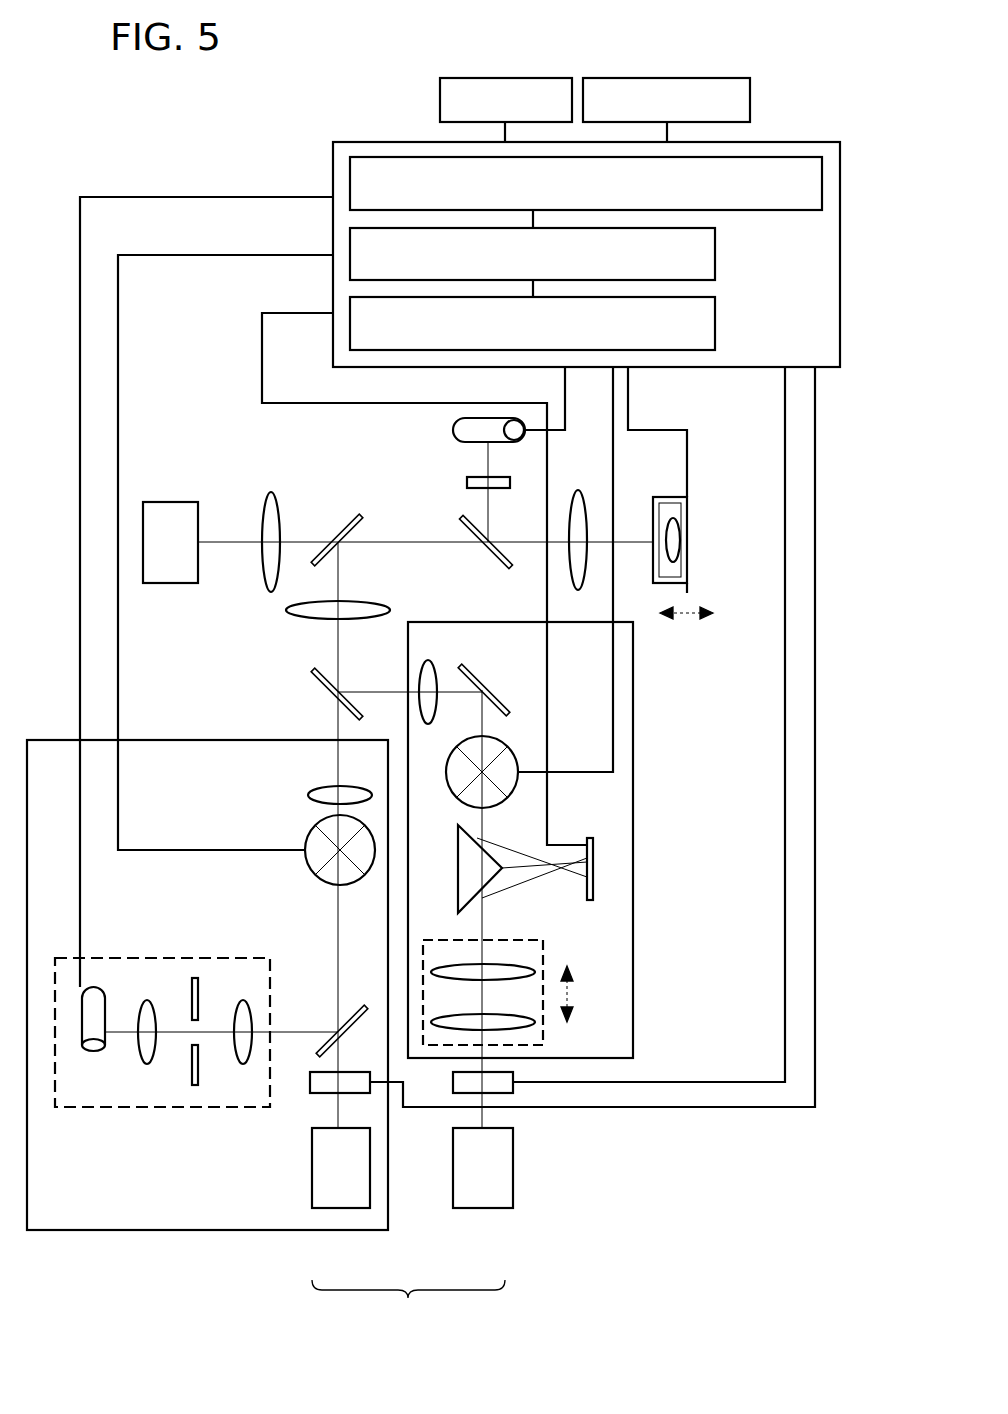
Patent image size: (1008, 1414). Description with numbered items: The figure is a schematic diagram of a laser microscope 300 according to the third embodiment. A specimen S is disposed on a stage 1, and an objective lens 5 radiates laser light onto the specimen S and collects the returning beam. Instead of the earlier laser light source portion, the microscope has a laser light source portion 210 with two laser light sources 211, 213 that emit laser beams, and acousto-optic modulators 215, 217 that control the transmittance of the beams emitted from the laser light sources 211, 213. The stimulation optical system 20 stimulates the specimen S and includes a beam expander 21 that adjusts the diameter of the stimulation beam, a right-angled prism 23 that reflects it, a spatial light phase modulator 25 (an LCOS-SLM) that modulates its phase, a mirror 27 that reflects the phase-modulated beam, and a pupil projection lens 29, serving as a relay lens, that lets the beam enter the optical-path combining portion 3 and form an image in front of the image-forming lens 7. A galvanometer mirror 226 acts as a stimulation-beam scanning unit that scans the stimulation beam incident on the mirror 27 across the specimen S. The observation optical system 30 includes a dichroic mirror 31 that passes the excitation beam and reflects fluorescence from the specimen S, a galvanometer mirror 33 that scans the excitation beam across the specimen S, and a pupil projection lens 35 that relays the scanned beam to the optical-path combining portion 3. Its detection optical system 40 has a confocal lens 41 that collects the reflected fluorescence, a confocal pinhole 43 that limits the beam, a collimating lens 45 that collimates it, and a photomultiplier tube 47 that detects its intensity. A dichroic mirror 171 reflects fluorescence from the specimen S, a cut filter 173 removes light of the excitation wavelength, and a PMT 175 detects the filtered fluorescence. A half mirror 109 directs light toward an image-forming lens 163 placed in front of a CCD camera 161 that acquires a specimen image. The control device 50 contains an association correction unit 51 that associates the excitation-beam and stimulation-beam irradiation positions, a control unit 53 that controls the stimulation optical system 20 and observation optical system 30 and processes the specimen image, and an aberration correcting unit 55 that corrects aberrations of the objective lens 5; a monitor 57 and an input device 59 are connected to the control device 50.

The stage 1 is at (690, 592).
The specimen S is at (680, 536).
The optical-path combining portion 3 is at (315, 690).
The objective lens 5 is at (582, 492).
The image-forming lens 7 is at (290, 610).
The stimulation optical system 20 is at (634, 942).
The beam expander 21 is at (545, 962).
The right-angled prism 23 is at (455, 860).
The spatial light phase modulator (LCOS-SLM) 25 is at (594, 884).
The mirror 27 is at (495, 680).
The pupil projection lens 29 is at (428, 660).
The observation optical system 30 is at (158, 1232).
The dichroic mirror 31 is at (352, 1010).
The galvanometer mirror 33 is at (312, 875).
The pupil projection lens 35 is at (308, 795).
The detection optical system 40 is at (147, 958).
The confocal lens 41 is at (243, 1000).
The confocal pinhole 43 is at (196, 1085).
The collimating lens 45 is at (147, 1064).
The photomultiplier tube 47 is at (93, 1052).
The control device 50 is at (333, 168).
The association correction unit 51 is at (382, 157).
The control unit 53 is at (715, 252).
The aberration correcting unit 55 is at (715, 323).
The monitor 57 is at (500, 78).
The input device 59 is at (663, 78).
The half mirror 109 is at (340, 522).
The CCD camera 161 is at (170, 502).
The image-forming lens 163 is at (268, 494).
The dichroic mirror 171 is at (465, 522).
The cut filter 173 is at (467, 480).
The PMT 175 is at (453, 430).
The laser light source portion 210 is at (408, 1305).
The laser light source 211 is at (478, 1195).
The laser light source 213 is at (340, 1195).
The acousto-optic modulator 215 is at (453, 1090).
The acousto-optic modulator 217 is at (310, 1085).
The galvanometer mirror 226 is at (518, 785).
The laser microscope 300 is at (692, 1156).